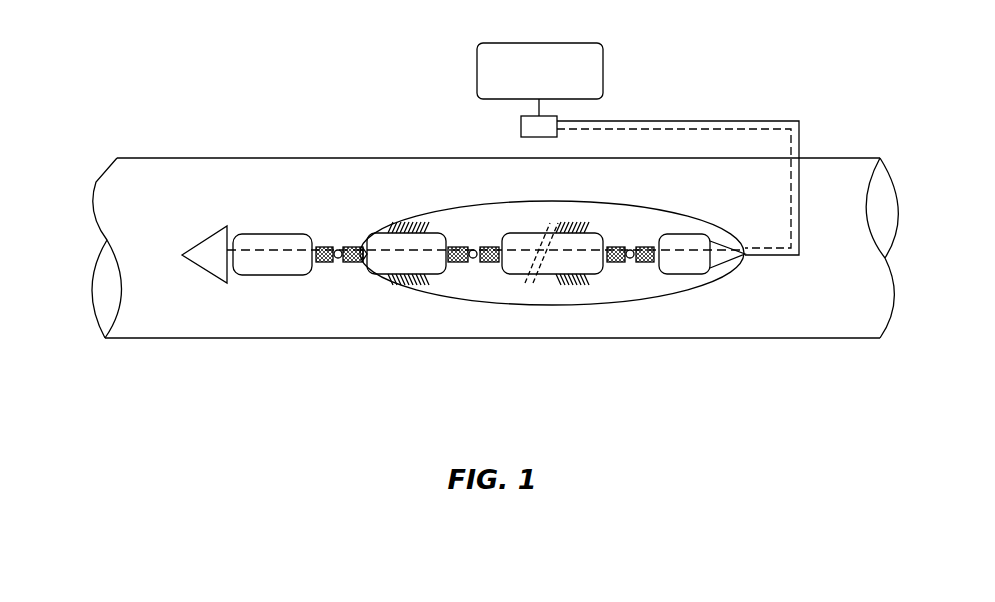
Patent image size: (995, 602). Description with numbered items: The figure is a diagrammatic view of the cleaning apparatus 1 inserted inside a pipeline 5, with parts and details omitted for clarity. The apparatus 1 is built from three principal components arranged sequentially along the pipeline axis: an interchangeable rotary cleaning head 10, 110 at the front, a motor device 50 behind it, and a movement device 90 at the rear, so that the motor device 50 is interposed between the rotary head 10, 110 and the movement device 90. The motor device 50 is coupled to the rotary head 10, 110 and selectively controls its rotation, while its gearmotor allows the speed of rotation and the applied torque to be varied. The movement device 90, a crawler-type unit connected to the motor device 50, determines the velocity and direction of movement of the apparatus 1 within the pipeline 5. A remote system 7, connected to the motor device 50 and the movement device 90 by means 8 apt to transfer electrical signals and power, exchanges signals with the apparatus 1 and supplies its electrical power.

The apparatus 1 is at (333, 208).
The pipeline 5 is at (260, 158).
The remote system 7 is at (477, 72).
The means apt to transfer electrical signals and power 8 is at (740, 122).
The rotary cleaning head 10 is at (241, 324).
The rotary cleaning head 110 is at (210, 278).
The motor device 50 is at (267, 276).
The movement device 90 is at (558, 303).